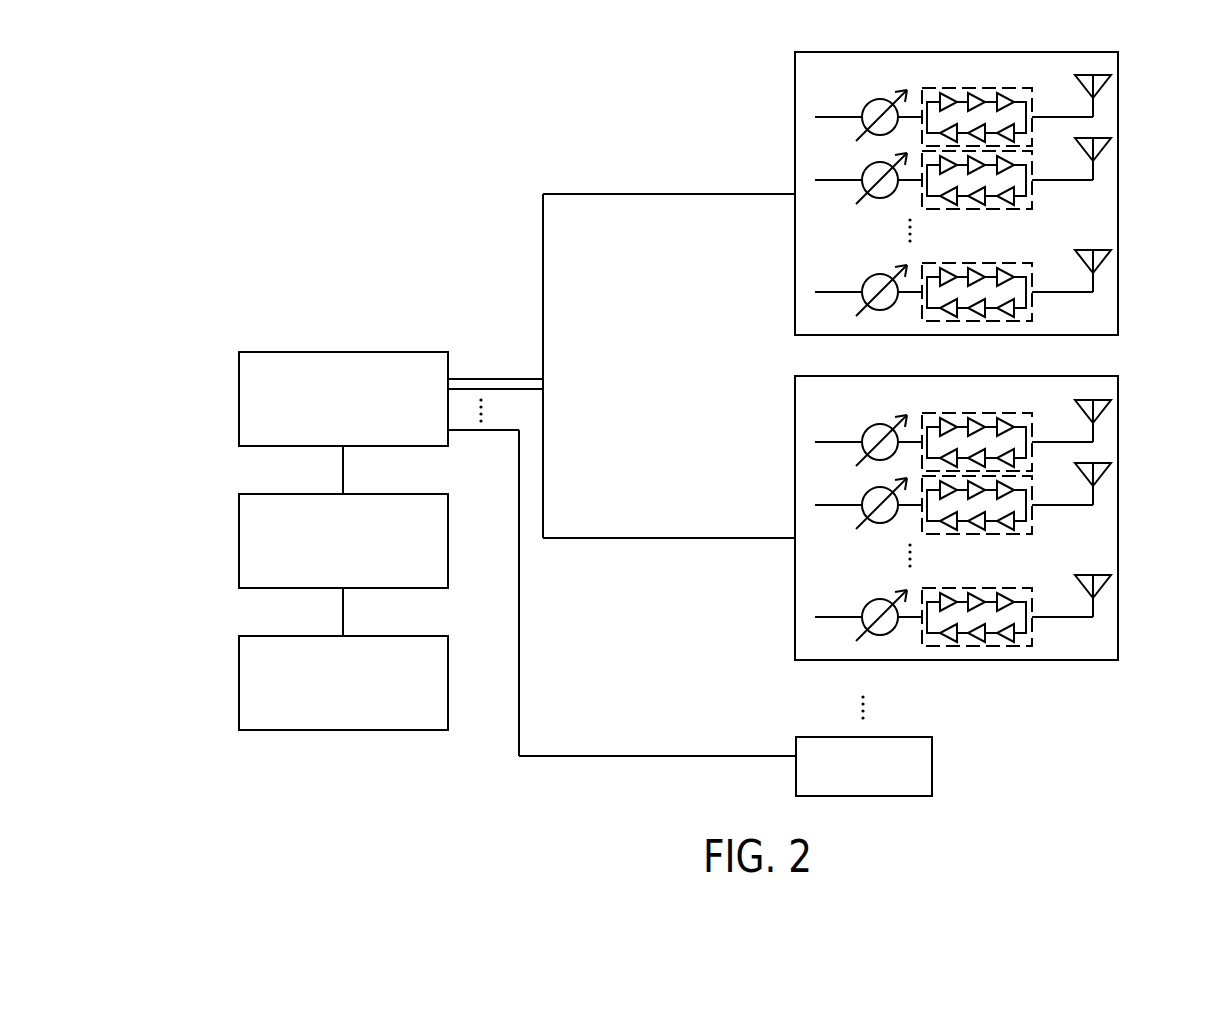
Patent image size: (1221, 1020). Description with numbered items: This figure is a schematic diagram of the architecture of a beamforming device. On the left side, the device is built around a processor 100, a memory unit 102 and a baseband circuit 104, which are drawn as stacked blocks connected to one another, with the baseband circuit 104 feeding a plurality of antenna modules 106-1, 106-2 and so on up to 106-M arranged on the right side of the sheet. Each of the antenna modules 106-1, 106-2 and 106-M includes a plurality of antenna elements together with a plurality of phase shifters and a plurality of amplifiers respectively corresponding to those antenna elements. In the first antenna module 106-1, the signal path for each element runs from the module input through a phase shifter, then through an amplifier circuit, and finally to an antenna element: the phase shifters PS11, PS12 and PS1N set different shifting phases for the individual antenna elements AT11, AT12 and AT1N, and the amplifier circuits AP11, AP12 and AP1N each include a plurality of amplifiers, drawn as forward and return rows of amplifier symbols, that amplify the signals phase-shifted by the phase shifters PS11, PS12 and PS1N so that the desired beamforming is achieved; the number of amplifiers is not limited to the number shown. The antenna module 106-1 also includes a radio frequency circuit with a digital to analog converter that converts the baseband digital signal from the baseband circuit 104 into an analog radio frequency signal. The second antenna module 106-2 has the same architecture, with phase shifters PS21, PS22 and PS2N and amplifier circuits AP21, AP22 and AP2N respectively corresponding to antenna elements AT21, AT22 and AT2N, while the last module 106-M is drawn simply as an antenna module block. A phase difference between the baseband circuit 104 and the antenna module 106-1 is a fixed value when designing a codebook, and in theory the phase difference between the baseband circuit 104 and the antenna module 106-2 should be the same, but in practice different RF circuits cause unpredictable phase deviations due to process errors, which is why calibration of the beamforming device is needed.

The processor 100 is at (239, 542).
The memory unit 102 is at (239, 684).
The baseband circuit 104 is at (239, 398).
The antenna module 106-1 is at (795, 98).
The antenna module 106-2 is at (795, 421).
The antenna module 106-M is at (932, 760).
The phase shifter PS11 is at (866, 104).
The phase shifter PS12 is at (866, 167).
The phase shifter PS1N is at (866, 279).
The phase shifter PS21 is at (866, 429).
The phase shifter PS22 is at (866, 492).
The phase shifter PS2N is at (866, 604).
The amplifier circuit AP11 is at (1042, 84).
The amplifier circuit AP12 is at (1033, 200).
The amplifier circuit AP1N is at (1033, 312).
The amplifier circuit AP21 is at (1042, 409).
The amplifier circuit AP22 is at (1033, 525).
The amplifier circuit AP2N is at (1033, 637).
The antenna element AT11 is at (1100, 88).
The antenna element AT12 is at (1100, 151).
The antenna element AT1N is at (1100, 263).
The antenna element AT21 is at (1100, 413).
The antenna element AT22 is at (1100, 476).
The antenna element AT2N is at (1100, 588).